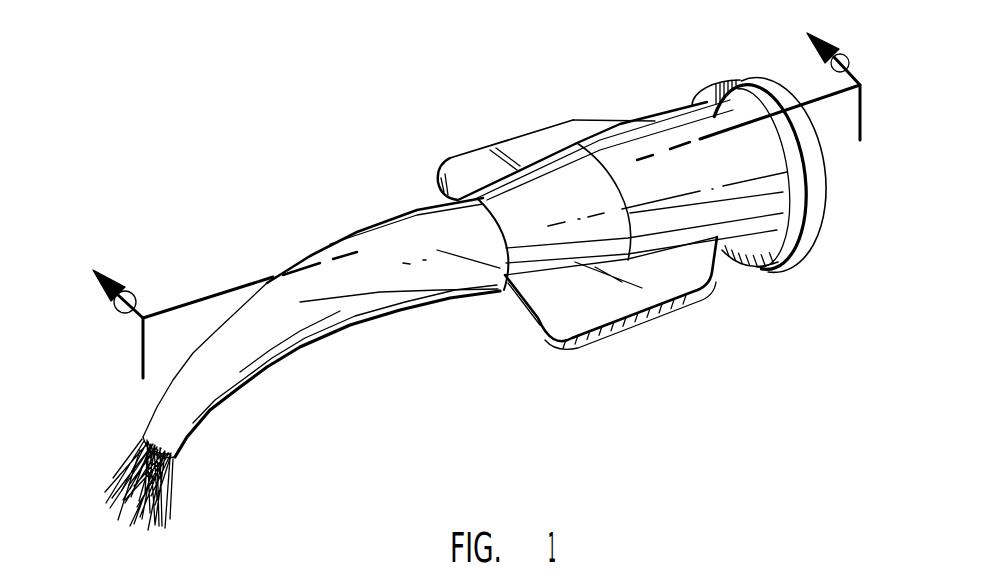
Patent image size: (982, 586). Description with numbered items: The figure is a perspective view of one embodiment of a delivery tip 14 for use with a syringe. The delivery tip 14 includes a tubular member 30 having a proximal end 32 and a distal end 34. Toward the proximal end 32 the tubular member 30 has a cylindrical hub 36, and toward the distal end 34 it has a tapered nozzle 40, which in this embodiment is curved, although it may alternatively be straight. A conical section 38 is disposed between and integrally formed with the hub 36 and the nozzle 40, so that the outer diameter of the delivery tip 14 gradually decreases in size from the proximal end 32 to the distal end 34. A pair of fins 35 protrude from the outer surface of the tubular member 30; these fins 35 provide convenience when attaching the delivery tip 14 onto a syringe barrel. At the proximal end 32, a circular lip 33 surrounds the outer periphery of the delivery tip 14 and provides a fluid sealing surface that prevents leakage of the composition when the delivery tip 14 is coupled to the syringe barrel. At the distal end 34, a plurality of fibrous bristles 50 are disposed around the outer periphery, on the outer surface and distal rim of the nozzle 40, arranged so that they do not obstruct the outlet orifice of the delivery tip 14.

The delivery tip 14 is at (402, 82).
The tubular member 30 is at (348, 218).
The proximal end 32 is at (713, 117).
The circular lip 33 is at (815, 224).
The distal end 34 is at (160, 432).
The fins 35 is at (473, 173).
The cylindrical hub 36 is at (632, 154).
The conical section 38 is at (547, 197).
The tapered nozzle 40 is at (333, 310).
The fibrous bristles 50 is at (123, 498).